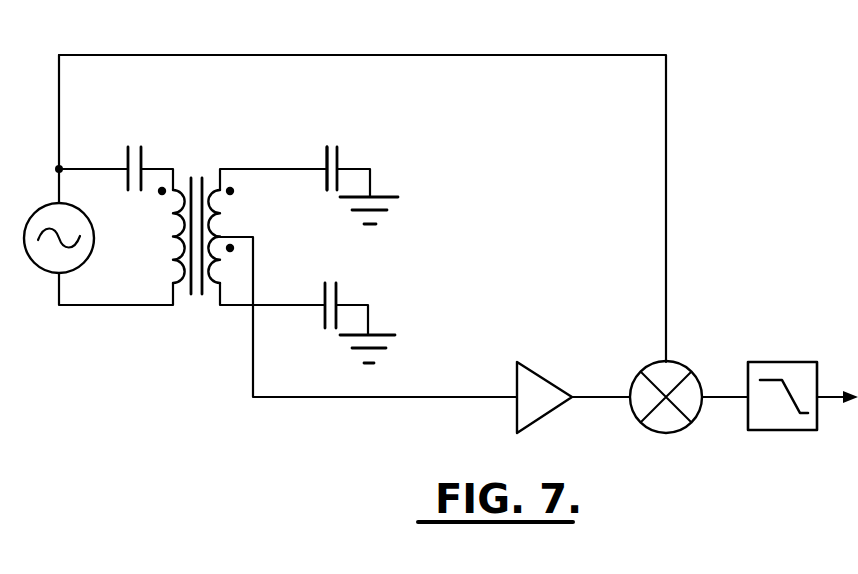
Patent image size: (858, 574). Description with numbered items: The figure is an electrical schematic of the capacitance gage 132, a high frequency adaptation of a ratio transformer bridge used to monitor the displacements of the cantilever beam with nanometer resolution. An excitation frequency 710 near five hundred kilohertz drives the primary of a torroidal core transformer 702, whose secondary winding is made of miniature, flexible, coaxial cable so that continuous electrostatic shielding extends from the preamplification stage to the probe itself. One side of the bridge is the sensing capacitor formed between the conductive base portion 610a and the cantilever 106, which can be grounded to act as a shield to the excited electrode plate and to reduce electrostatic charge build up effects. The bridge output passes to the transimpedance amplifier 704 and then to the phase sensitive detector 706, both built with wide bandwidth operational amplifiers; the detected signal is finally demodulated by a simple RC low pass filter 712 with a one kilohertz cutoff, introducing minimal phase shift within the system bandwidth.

The capacitance gage 132 is at (712, 76).
The excitation frequency 710 is at (93, 224).
The torroidal core transformer 702 is at (203, 170).
The cantilever 106 is at (341, 150).
The conductive base portion 610a is at (324, 152).
The transimpedance amplifier 704 is at (548, 410).
The phase sensitive detector 706 is at (675, 366).
The RC low pass filter 712 is at (780, 360).